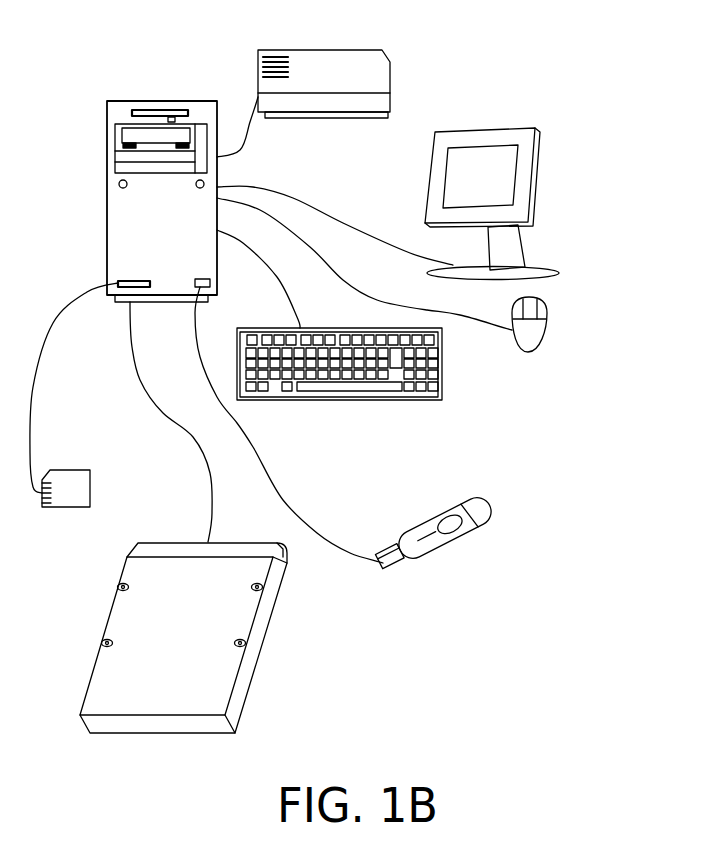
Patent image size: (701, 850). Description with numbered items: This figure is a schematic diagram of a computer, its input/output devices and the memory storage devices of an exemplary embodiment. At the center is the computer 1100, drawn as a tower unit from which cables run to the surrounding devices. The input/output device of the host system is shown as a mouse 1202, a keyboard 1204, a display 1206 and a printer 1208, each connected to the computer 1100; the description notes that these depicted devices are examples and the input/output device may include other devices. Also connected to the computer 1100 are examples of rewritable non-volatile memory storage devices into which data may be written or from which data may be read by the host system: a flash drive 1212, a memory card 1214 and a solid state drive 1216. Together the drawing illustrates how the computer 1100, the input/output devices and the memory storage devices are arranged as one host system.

The computer 1100 is at (163, 101).
The mouse 1202 is at (546, 330).
The keyboard 1204 is at (442, 375).
The display 1206 is at (495, 130).
The printer 1208 is at (318, 50).
The flash drive 1212 is at (432, 525).
The memory card 1214 is at (92, 480).
The solid state drive (SSD) 1216 is at (232, 531).